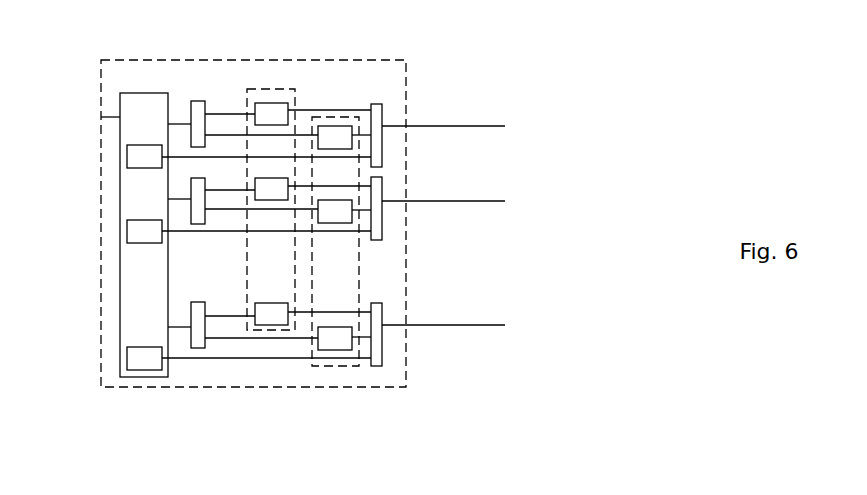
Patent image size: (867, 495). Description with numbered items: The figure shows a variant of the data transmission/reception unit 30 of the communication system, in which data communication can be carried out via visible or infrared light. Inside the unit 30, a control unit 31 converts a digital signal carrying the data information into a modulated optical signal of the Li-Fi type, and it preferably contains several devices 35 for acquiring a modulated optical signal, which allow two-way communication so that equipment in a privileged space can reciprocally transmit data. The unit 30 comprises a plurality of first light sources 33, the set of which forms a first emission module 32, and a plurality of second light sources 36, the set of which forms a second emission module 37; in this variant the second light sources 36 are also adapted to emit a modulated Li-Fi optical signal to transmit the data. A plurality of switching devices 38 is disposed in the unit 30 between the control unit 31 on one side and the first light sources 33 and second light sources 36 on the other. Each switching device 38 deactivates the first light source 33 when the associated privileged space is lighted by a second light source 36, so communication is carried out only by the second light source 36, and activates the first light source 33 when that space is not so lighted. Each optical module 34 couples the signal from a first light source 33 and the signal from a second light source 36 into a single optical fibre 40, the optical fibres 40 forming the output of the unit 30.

The data transmission/reception unit 30 is at (101, 77).
The control unit 31 is at (108, 117).
The first emission module 32 is at (265, 89).
The first light source 33 is at (275, 113).
The optical module 34 is at (378, 107).
The device for acquiring a modulated optical signal 35 is at (140, 154).
The second light source 36 is at (342, 138).
The second emission module 37 is at (328, 117).
The switching device 38 is at (196, 113).
The optical fibre 40 is at (505, 126).